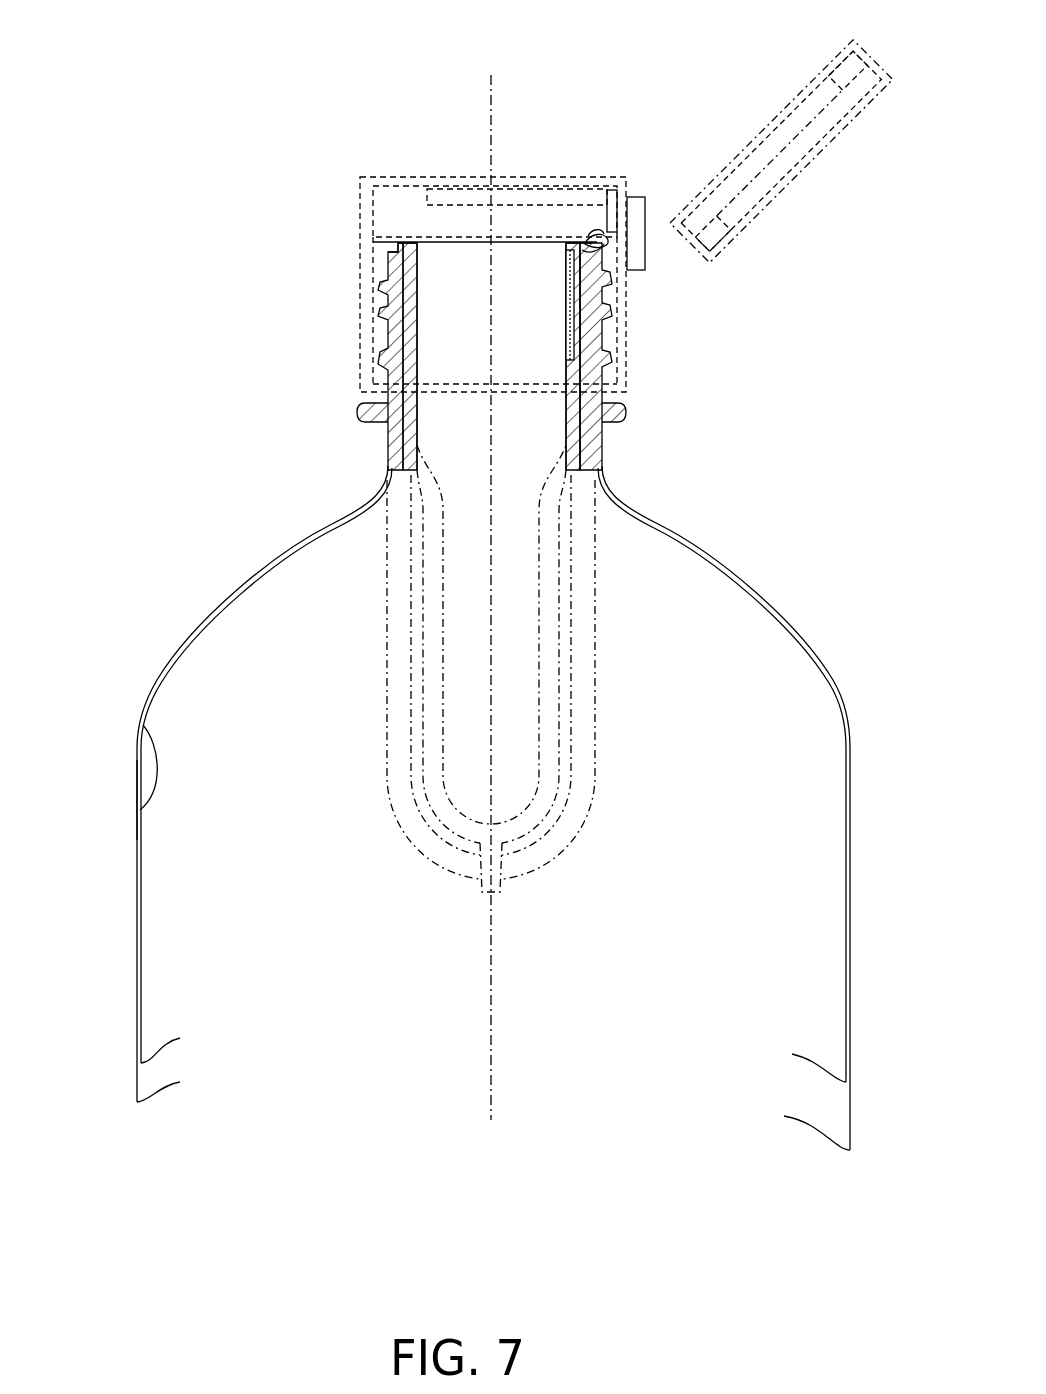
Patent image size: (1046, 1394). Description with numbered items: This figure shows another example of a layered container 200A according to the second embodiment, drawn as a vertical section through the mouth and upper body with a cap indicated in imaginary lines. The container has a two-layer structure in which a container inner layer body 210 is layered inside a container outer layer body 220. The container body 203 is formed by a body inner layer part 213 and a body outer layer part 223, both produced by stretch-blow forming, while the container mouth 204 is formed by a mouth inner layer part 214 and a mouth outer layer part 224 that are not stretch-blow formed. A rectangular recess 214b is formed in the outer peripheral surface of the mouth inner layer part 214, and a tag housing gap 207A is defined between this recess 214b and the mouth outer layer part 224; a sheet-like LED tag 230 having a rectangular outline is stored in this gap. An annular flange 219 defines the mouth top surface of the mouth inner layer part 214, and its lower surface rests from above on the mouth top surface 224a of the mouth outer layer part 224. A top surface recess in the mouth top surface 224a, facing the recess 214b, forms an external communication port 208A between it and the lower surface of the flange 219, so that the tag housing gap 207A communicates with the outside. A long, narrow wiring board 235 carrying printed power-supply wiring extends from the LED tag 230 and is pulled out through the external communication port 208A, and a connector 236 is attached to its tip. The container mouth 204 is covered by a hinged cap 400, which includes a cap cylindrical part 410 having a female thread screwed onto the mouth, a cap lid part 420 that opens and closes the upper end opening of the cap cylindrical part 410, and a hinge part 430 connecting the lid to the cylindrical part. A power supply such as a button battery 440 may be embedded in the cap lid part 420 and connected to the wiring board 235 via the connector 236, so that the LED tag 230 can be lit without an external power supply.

The layered container 200A is at (195, 165).
The container body 203 is at (105, 660).
The container mouth 204 is at (270, 237).
The tag housing gap 207A is at (579, 348).
The external communication port 208A is at (603, 248).
The container inner layer body 210 is at (205, 625).
The body inner layer part 213 is at (143, 725).
The mouth inner layer part 214 is at (405, 300).
The recess 214b is at (566, 335).
The flange 219 is at (400, 246).
The container outer layer body 220 is at (178, 635).
The body outer layer part 223 is at (133, 835).
The mouth outer layer part 224 is at (392, 340).
The mouth top surface 224a is at (405, 243).
The LED tag 230 is at (582, 305).
The wiring board 235 is at (593, 253).
The connector 236 is at (606, 228).
The hinged cap 400 is at (505, 165).
The cap cylindrical part 410 is at (632, 340).
The cap lid part 420 is at (548, 172).
The hinge part 430 is at (634, 195).
The button battery 440 is at (465, 188).